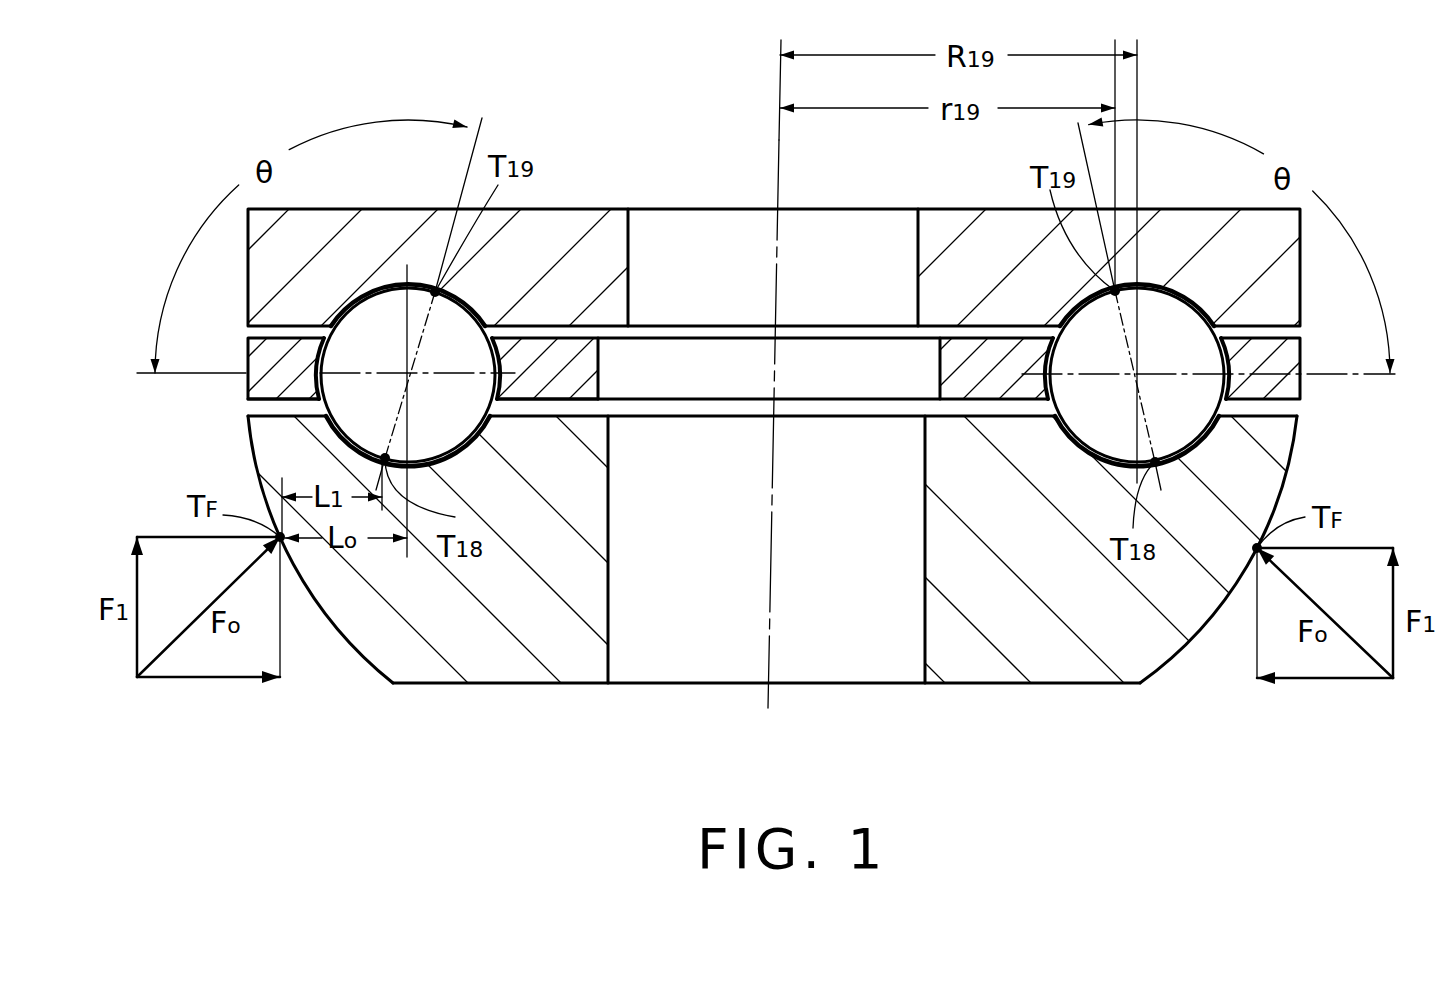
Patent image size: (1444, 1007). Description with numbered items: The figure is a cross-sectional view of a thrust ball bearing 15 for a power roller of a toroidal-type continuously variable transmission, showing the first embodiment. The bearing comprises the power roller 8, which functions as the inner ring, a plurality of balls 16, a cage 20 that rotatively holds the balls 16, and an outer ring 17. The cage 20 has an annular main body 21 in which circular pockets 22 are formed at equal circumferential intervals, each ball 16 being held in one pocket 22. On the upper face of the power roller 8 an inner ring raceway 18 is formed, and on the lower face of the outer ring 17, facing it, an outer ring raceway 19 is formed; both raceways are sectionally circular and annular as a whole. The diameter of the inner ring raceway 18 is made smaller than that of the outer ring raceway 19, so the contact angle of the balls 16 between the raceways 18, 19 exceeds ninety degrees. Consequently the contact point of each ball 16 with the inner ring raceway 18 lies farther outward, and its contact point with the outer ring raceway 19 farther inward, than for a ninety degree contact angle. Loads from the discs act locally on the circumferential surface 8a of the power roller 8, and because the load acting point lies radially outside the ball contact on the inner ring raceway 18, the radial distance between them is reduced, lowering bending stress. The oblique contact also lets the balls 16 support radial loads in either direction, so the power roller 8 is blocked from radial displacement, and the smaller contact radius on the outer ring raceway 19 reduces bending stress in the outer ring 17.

The power roller 8 is at (1055, 645).
The circumferential surface 8a is at (1212, 620).
The thrust ball bearing 15 is at (387, 312).
The ball 16 is at (353, 423).
The outer ring 17 is at (1172, 253).
The inner ring raceway 18 is at (1080, 442).
The outer ring raceway 19 is at (1075, 312).
The cage 20 is at (248, 385).
The main body 21 is at (267, 403).
The pocket 22 is at (488, 323).